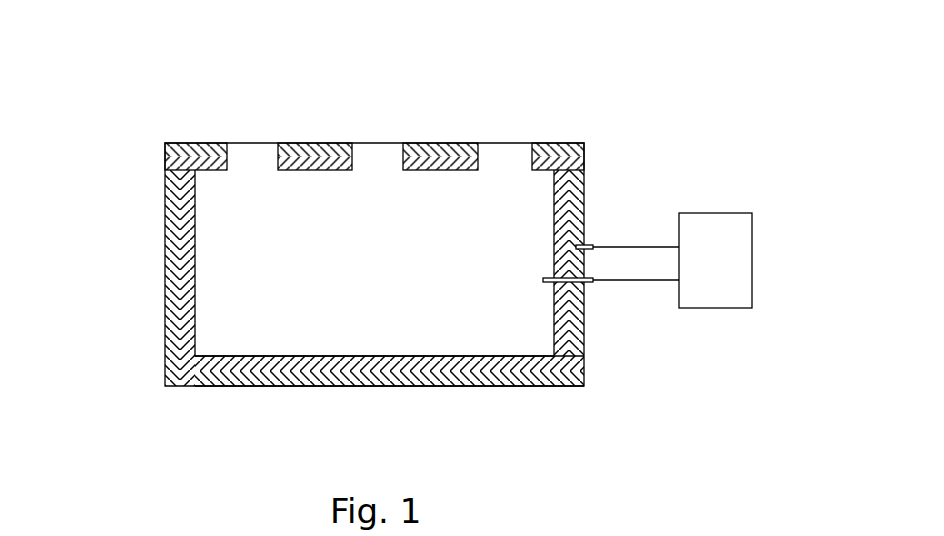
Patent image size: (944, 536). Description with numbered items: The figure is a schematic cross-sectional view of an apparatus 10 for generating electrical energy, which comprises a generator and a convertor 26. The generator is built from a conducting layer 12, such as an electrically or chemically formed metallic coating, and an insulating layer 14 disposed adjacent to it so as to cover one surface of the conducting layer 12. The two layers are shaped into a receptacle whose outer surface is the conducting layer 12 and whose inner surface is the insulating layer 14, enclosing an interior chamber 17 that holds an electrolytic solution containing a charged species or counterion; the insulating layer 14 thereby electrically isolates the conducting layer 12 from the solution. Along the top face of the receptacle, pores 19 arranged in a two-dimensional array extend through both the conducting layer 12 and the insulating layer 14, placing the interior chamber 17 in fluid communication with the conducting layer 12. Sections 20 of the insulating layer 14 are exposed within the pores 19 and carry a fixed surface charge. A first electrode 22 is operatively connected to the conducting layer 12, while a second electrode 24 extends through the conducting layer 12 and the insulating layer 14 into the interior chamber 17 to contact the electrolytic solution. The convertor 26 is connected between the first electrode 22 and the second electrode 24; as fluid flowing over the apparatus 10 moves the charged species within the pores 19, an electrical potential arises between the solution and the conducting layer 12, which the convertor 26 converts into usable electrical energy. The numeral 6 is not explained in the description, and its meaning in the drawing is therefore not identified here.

The apparatus for generating electrical energy 10 is at (128, 193).
The housing 6 is at (371, 232).
The conducting layer 12 is at (413, 109).
The insulating layer 14 is at (582, 386).
The interior chamber 17 is at (368, 270).
The pores 19 is at (245, 148).
The exposed sections of the insulating layer 20 is at (228, 158).
The first electrode 22 is at (590, 245).
The second electrode 24 is at (592, 283).
The convertor 26 is at (738, 250).